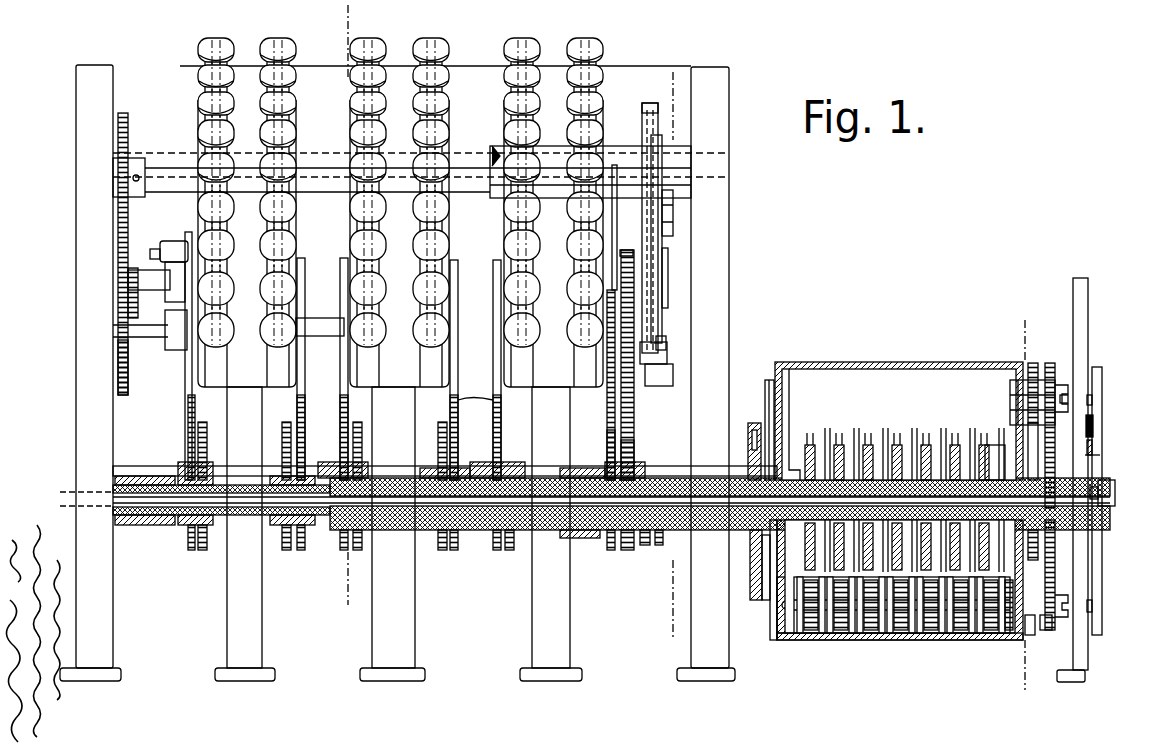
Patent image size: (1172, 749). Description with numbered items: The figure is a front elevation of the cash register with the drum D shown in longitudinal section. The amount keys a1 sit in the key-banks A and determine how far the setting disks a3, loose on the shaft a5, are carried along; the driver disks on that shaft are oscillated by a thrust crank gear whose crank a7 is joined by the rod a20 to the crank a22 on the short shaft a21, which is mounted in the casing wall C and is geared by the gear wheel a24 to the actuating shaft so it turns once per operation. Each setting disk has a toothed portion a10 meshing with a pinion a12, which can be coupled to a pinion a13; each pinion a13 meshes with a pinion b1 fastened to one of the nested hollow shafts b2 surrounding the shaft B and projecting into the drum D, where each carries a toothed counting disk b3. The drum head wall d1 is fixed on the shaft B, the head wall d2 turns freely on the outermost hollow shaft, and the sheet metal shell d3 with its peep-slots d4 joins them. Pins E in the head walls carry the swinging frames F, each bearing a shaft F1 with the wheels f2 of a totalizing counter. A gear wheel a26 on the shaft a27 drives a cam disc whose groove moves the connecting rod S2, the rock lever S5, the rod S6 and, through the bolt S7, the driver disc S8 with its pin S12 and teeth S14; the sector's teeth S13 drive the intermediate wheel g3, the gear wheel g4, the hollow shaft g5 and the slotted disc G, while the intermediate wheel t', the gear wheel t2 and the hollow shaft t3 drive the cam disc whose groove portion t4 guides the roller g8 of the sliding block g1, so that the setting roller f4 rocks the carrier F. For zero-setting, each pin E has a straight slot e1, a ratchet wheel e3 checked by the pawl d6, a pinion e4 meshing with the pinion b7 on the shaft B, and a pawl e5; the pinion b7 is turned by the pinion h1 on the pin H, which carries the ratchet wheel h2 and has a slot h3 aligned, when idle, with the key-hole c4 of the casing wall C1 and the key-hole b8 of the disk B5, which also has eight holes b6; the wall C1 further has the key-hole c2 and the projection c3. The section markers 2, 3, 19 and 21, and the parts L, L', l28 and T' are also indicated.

The key-banks A is at (242, 70).
The shaft B is at (175, 500).
The casing wall C is at (85, 410).
The drum D is at (868, 372).
The pins E is at (790, 630).
The frame F is at (1005, 633).
The slotted disc G is at (750, 560).
The pin H is at (1003, 394).
The section line 2 is at (337, 305).
The section line 3 is at (1015, 502).
The section line 19 is at (672, 344).
The rod 21 is at (187, 232).
The amount keys a1 is at (285, 140).
The setting disks a3 is at (300, 262).
The shaft a5 is at (316, 320).
The crank a7 is at (113, 328).
The toothed portion a10 is at (479, 386).
The pinion a12 is at (292, 442).
The pinion a13 is at (208, 440).
The rod a20 is at (170, 243).
The short shaft a21 is at (128, 310).
The crank a22 is at (128, 270).
The gear wheel a24 is at (118, 350).
The gear wheel a26 is at (118, 118).
The shaft a27 is at (156, 175).
The pinions b1 is at (210, 552).
The hollow shafts b2 is at (580, 540).
The toothed counting disk b3 is at (840, 445).
The holes b6 is at (1092, 608).
The pinion b7 is at (1040, 470).
The key-hole b8 is at (1092, 398).
The key-hole c2 is at (1092, 455).
The projection c3 is at (1092, 447).
The key-hole c4 is at (1093, 428).
The casing wall C1 is at (1087, 295).
The disk B5 is at (1116, 495).
The head wall d1 is at (1028, 372).
The head wall d2 is at (790, 392).
The sheet metal shell d3 is at (905, 375).
The peep-slots d4 is at (826, 640).
The spring-influenced pawl d6 is at (1040, 545).
The straight slot e1 is at (1070, 605).
The ratchet wheel e3 is at (1030, 635).
The pinion e4 is at (1055, 580).
The pawl e5 is at (1046, 630).
The wheels f2 is at (875, 633).
The setting roller f4 is at (780, 605).
The shaft F1 is at (915, 633).
The sliding block g1 is at (770, 380).
The intermediate wheel g3 is at (607, 430).
The gear wheel g4 is at (612, 560).
The hollow shaft g5 is at (598, 550).
The roller g8 is at (754, 418).
The pinion h1 is at (1065, 388).
The ratchet wheel h2 is at (1050, 363).
The slot h3 is at (1072, 400).
The lever L is at (612, 86).
The rod L' is at (586, 245).
The rod l28 is at (644, 120).
The connecting rod S2 is at (673, 222).
The rock lever S5 is at (658, 278).
The rod S6 is at (667, 372).
The bolt S7 is at (666, 342).
The driver disc S8 is at (662, 300).
The pin S12 is at (668, 262).
The teeth S13 is at (607, 395).
The teeth S14 is at (634, 400).
The intermediate wheel t' is at (637, 457).
The gear wheel t2 is at (645, 548).
The hollow shaft t3 is at (660, 548).
The cam groove portion t4 is at (762, 560).
The plate T' is at (736, 580).